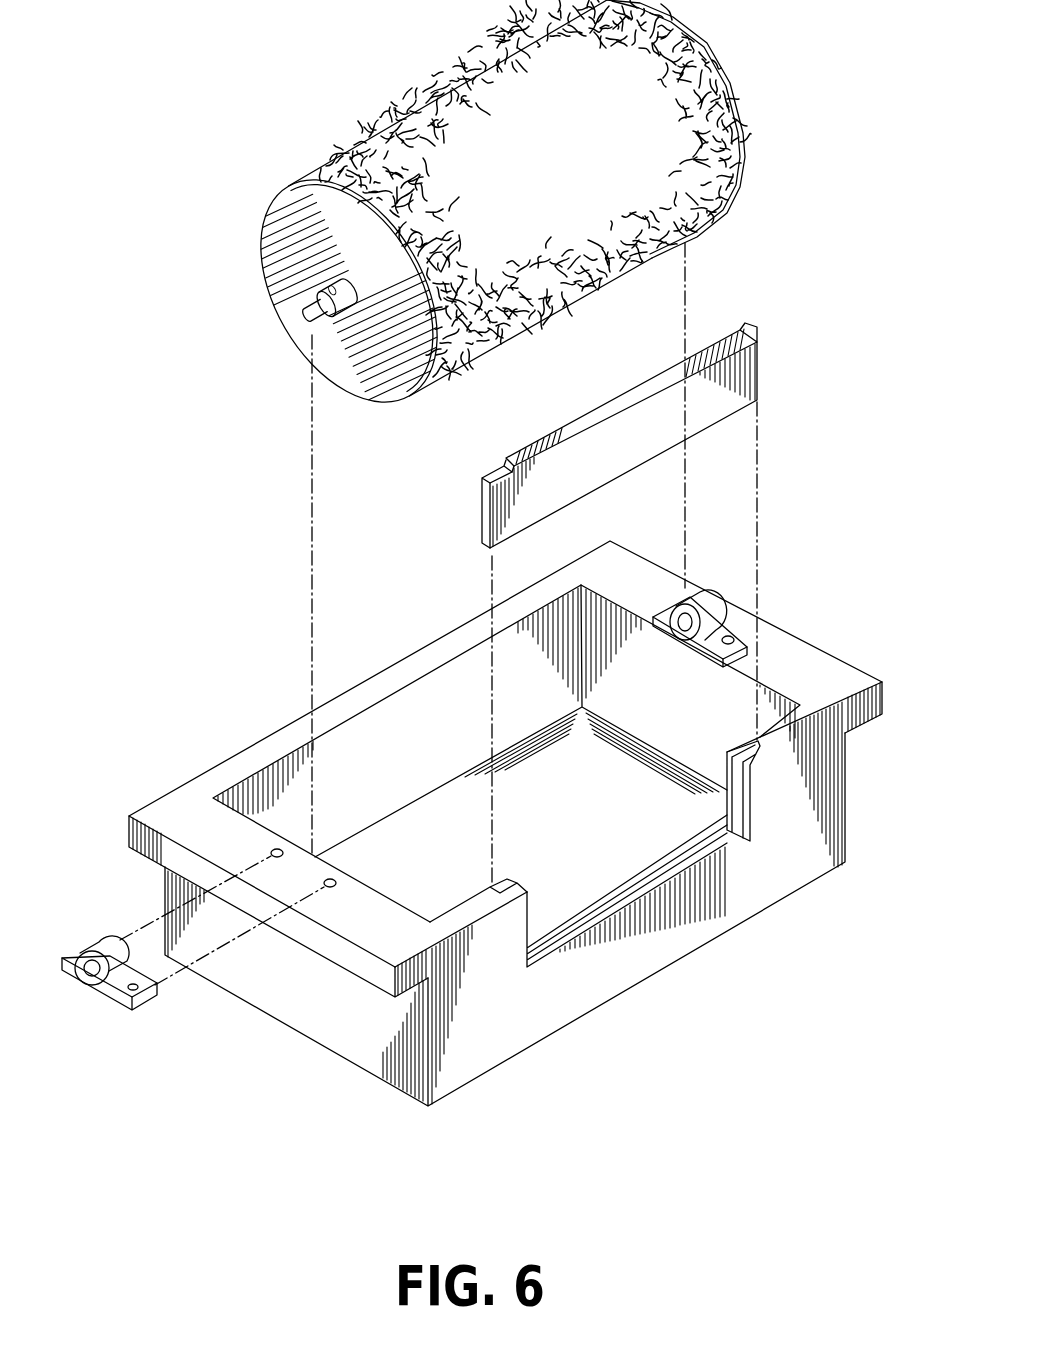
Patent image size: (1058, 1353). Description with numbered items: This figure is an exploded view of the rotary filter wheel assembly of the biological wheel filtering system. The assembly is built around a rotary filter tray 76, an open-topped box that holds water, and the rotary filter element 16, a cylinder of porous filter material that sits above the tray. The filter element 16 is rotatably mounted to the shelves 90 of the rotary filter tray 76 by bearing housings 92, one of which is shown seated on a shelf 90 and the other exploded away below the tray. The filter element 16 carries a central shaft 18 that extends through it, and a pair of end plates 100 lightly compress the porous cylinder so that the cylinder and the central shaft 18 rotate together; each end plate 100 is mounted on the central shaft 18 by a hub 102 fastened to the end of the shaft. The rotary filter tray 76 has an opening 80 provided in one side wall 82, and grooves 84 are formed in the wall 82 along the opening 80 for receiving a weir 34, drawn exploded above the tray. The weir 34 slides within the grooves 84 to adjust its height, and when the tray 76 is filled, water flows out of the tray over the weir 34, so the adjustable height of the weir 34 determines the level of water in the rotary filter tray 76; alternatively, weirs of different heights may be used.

The rotary filter element 16 is at (444, 83).
The central shaft 18 is at (313, 329).
The weir 34 is at (505, 515).
The rotary filter tray 76 is at (342, 1078).
The opening 80 is at (735, 842).
The side wall 82 is at (688, 933).
The grooves 84 is at (567, 932).
The shelves 90 is at (808, 672).
The bearing housings 92 is at (713, 590).
The end plates 100 is at (368, 388).
The hubs 102 is at (318, 284).